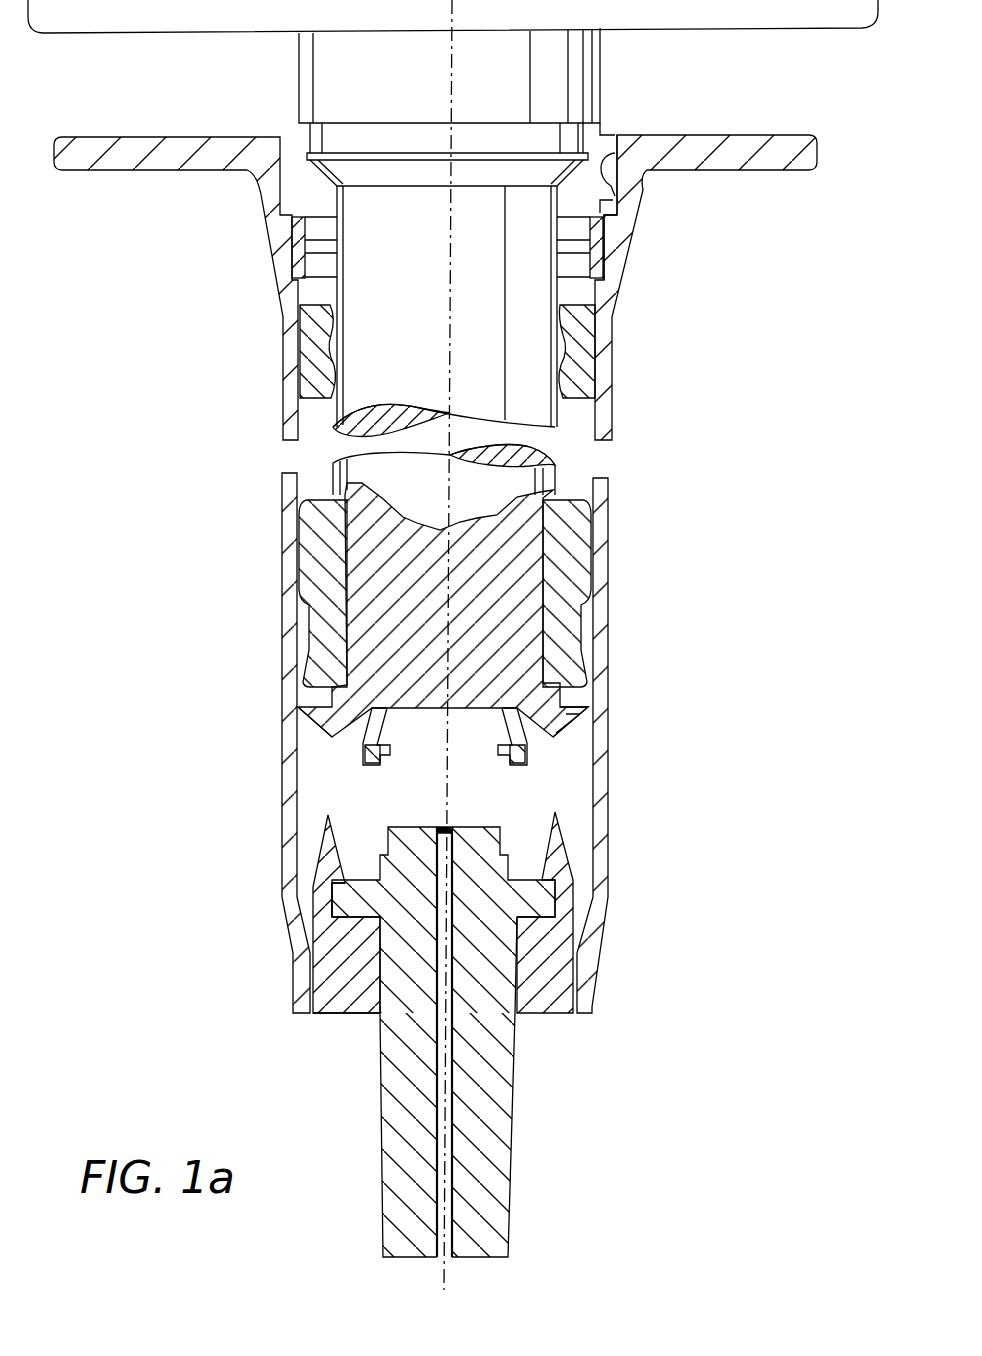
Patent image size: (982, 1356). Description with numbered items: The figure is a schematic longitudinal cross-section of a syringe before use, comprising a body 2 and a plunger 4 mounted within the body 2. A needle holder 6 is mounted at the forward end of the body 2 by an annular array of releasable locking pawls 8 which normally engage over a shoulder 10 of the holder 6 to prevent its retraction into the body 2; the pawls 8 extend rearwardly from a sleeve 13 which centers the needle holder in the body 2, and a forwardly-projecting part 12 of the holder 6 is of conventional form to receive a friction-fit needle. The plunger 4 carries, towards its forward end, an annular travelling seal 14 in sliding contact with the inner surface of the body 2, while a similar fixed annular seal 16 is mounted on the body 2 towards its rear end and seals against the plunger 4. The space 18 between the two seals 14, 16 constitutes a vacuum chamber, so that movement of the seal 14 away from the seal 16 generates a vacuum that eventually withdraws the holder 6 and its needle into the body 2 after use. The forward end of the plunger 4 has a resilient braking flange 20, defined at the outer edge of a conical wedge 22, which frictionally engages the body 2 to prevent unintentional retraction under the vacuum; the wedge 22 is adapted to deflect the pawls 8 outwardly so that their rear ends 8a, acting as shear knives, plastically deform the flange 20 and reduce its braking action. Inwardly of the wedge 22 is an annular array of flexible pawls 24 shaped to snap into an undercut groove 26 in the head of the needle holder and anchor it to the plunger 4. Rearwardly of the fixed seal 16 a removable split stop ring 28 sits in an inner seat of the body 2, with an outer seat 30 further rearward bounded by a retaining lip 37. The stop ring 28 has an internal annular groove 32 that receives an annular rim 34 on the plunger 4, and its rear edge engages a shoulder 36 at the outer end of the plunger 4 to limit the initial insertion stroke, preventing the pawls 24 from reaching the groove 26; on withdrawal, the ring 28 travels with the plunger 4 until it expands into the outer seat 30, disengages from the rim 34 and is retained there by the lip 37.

The body 2 is at (603, 608).
The plunger 4 is at (522, 568).
The needle holder 6 is at (451, 1042).
The releasable locking pawls 8 is at (327, 867).
The rear ends of the retaining pawls 8a is at (557, 810).
The shoulder 10 is at (530, 902).
The forwardly-projecting part 12 is at (490, 1180).
The sleeve 13 is at (330, 1013).
The annular travelling seal 14 is at (565, 645).
The fixed annular seal 16 is at (593, 352).
The vacuum chamber 18 is at (573, 430).
The braking flange 20 is at (580, 733).
The conical wedge 22 is at (555, 745).
The flexible pawls 24 is at (393, 757).
The undercut groove 26 is at (340, 903).
The stop ring 28 is at (295, 272).
The outer seat 30 is at (293, 238).
The annular groove 32 is at (598, 268).
The annular rim 34 is at (601, 201).
The shoulder 36 is at (600, 130).
The retaining lip 37 is at (619, 136).